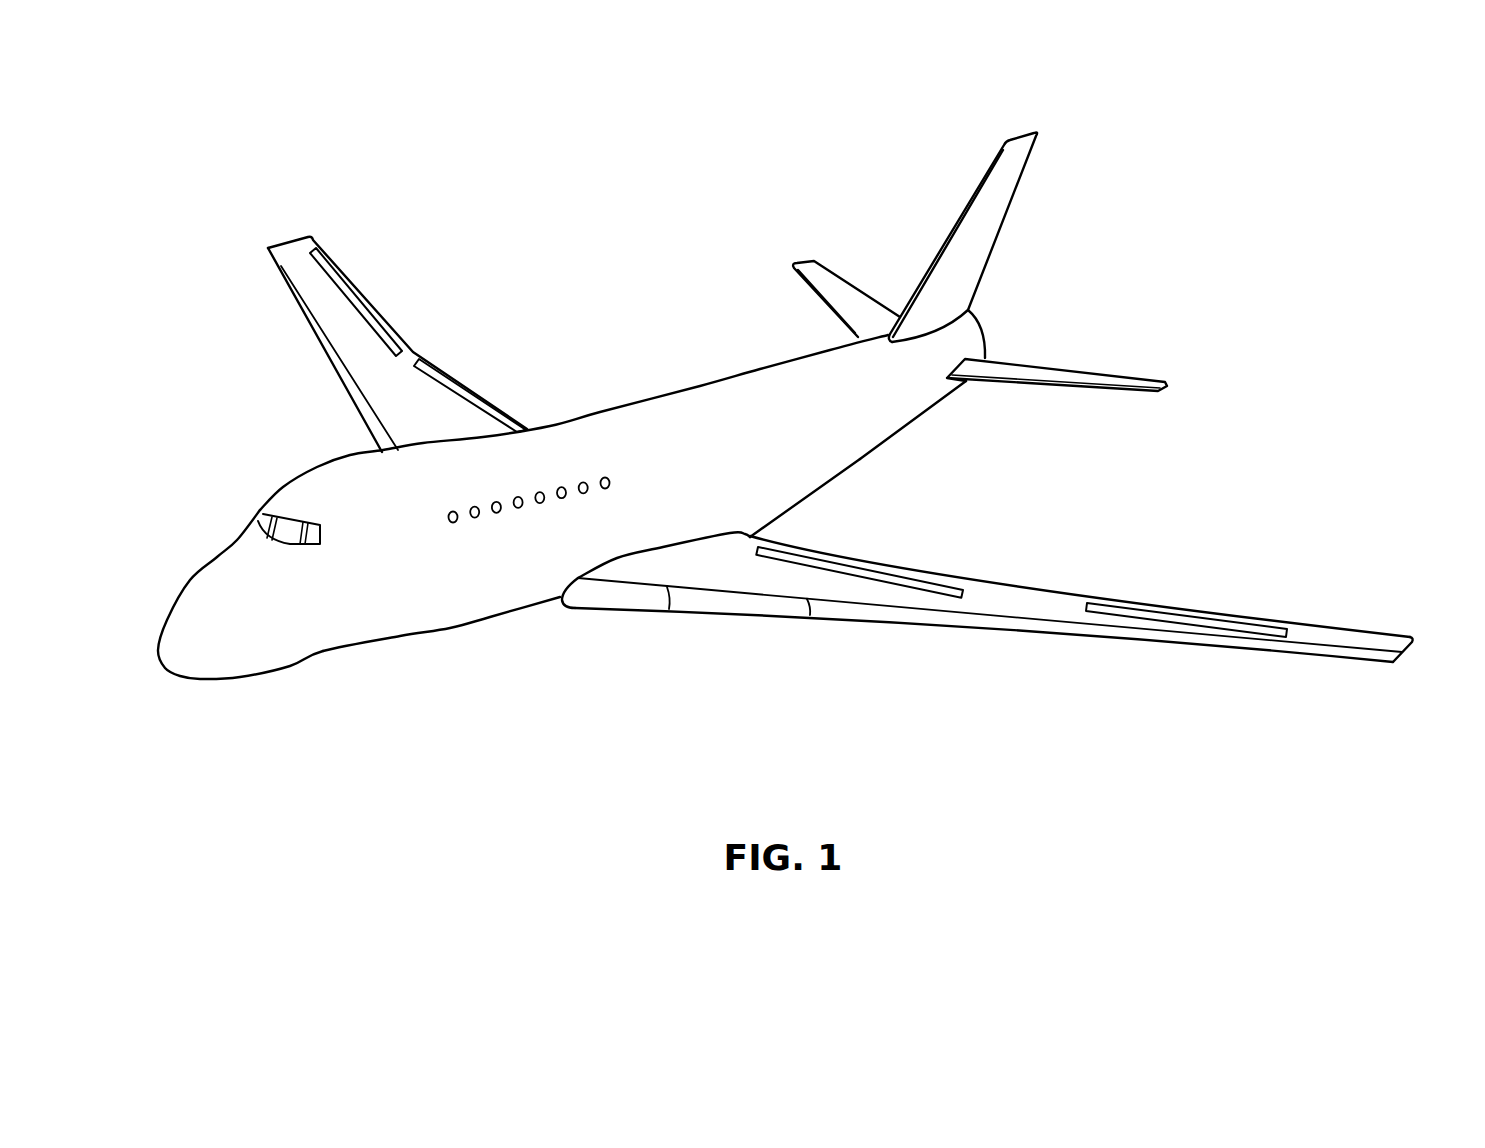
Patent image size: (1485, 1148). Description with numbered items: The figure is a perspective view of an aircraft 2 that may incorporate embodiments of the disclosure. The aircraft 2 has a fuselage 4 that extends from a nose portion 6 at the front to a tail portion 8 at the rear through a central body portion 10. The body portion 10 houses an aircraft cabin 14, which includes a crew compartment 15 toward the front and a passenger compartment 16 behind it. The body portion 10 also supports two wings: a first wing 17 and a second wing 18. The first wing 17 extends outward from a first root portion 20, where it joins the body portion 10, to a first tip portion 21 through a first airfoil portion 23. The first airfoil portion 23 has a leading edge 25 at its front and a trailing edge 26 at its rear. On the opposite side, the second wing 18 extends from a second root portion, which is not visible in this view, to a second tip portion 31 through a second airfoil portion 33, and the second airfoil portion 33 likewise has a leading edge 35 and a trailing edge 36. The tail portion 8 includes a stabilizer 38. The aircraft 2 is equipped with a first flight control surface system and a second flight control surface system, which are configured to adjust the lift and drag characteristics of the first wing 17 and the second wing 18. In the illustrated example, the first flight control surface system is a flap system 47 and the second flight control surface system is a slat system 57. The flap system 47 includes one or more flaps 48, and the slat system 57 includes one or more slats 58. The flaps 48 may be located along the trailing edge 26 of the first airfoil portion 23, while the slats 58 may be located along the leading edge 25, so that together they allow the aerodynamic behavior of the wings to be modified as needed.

The aircraft 2 is at (787, 442).
The fuselage 4 is at (548, 505).
The nose portion 6 is at (170, 650).
The tail portion 8 is at (927, 407).
The body portion 10 is at (797, 493).
The aircraft cabin 14 is at (575, 541).
The crew compartment 15 is at (260, 511).
The passenger compartment 16 is at (607, 438).
The first wing 17 is at (1002, 639).
The second wing 18 is at (320, 232).
The first root portion 20 is at (1020, 629).
The first tip portion 21 is at (1407, 645).
The first airfoil portion 23 is at (858, 598).
The leading edge 25 is at (782, 603).
The trailing edge 26 is at (995, 583).
The second tip portion 31 is at (310, 241).
The second airfoil portion 33 is at (368, 314).
The leading edge 35 is at (280, 273).
The trailing edge 36 is at (377, 307).
The stabilizer 38 is at (1036, 345).
The flap system 47 is at (1197, 529).
The flaps 48 is at (1165, 608).
The slat system 57 is at (841, 723).
The slats 58 is at (682, 603).